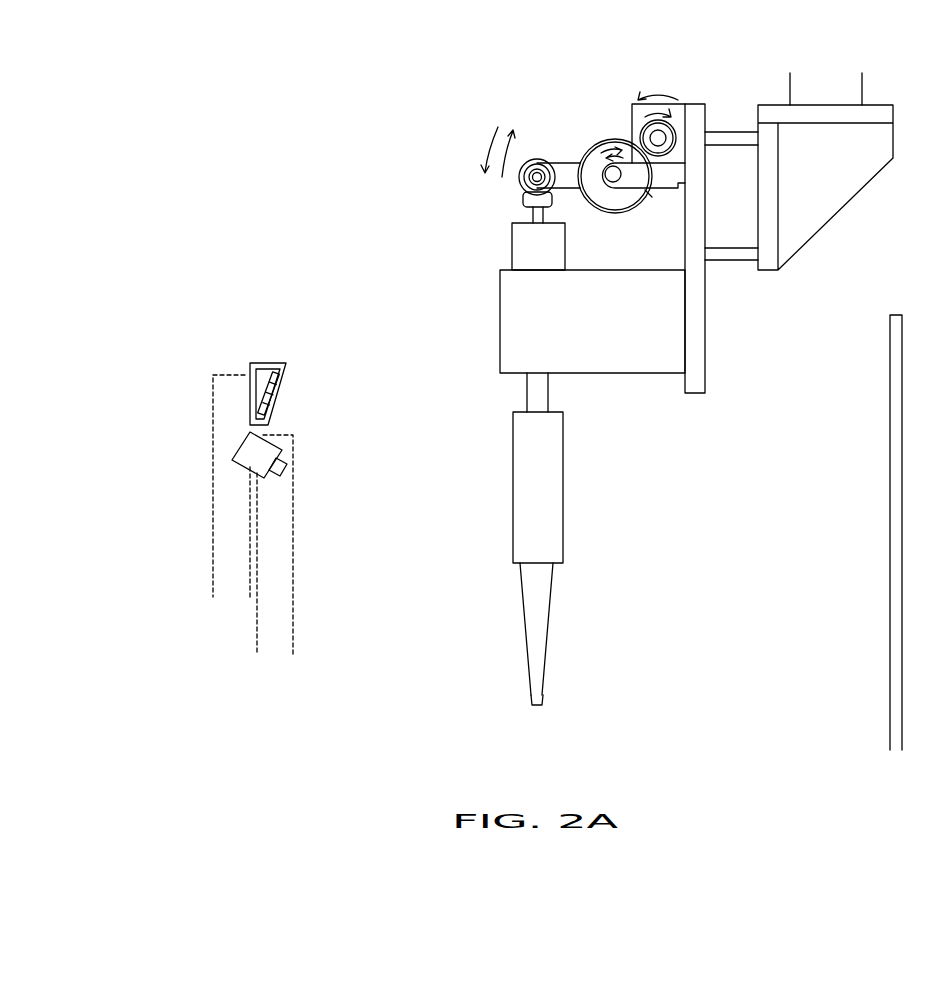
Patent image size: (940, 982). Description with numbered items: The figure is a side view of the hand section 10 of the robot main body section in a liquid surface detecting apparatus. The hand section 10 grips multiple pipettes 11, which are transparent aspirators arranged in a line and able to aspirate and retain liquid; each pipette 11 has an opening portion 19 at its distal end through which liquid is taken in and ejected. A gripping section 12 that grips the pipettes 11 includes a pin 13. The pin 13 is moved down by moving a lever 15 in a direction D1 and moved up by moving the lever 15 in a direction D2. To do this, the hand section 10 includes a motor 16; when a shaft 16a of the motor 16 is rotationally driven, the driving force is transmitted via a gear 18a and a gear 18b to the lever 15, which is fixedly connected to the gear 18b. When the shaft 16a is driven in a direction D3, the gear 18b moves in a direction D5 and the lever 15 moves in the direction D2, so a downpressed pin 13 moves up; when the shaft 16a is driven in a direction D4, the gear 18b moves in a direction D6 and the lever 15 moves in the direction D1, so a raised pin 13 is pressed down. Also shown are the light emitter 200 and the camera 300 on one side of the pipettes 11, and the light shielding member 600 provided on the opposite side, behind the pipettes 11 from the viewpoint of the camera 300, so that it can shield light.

The hand section 10 is at (431, 148).
The pipette 11 is at (552, 627).
The gripping section 12 is at (500, 323).
The pin 13 is at (523, 198).
The lever 15 is at (548, 157).
The motor 16 is at (630, 124).
The shaft 16a is at (678, 138).
The gear 18a is at (704, 128).
The gear 18b is at (620, 214).
The opening portion 19 is at (540, 707).
The light emitter 200 is at (283, 387).
The camera 300 is at (285, 457).
The light shielding member 600 is at (896, 313).
The direction D1 is at (482, 150).
The direction D2 is at (523, 153).
The direction D3 is at (652, 92).
The direction D4 is at (668, 112).
The direction D5 is at (612, 143).
The direction D6 is at (600, 150).